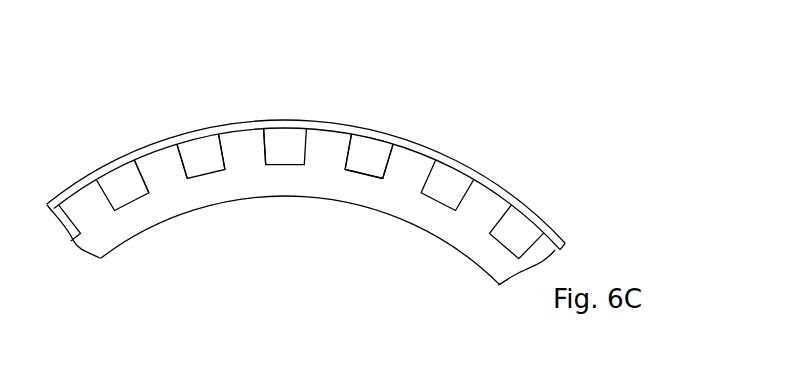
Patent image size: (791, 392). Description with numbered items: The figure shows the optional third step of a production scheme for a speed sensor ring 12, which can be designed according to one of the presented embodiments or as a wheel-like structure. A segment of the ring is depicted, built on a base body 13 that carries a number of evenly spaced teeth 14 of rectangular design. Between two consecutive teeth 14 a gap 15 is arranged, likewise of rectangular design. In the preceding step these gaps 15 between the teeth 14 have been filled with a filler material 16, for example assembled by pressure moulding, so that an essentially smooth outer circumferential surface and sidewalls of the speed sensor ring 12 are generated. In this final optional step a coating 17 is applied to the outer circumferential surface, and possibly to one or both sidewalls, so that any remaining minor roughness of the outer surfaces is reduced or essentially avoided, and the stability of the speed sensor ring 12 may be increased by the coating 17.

The speed sensor ring 12 is at (530, 139).
The base body 13 is at (279, 205).
The teeth 14 is at (160, 163).
The gap 15 is at (367, 171).
The filler material 16 is at (122, 180).
The coating 17 is at (307, 123).